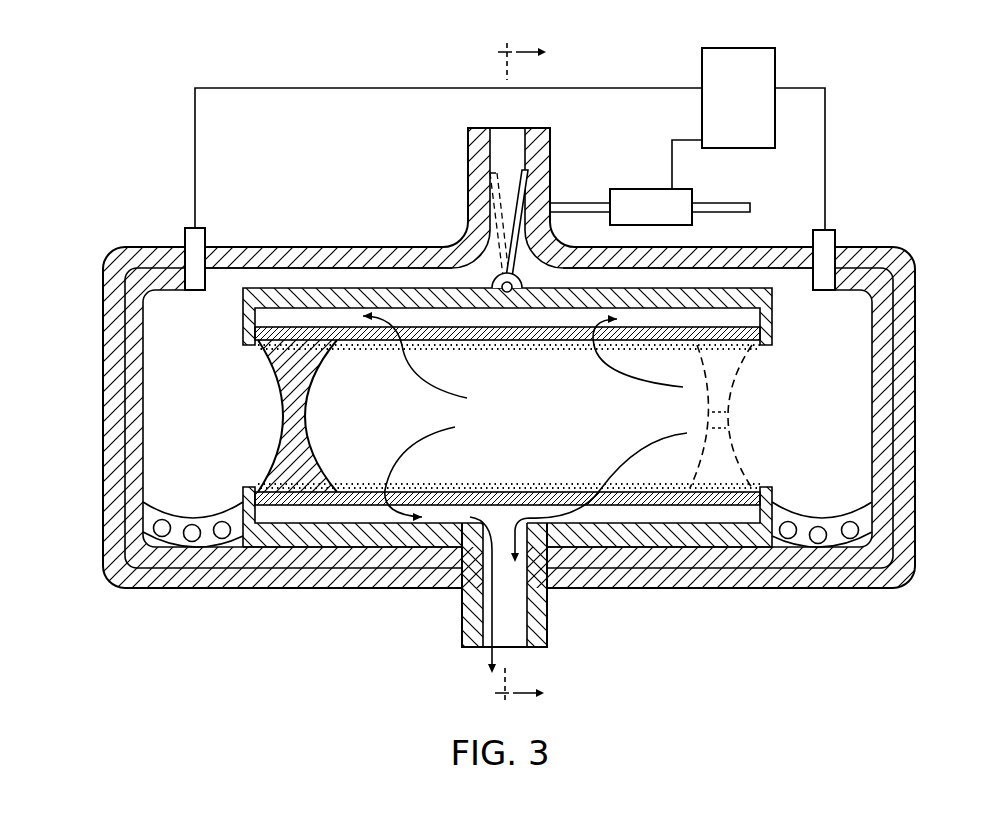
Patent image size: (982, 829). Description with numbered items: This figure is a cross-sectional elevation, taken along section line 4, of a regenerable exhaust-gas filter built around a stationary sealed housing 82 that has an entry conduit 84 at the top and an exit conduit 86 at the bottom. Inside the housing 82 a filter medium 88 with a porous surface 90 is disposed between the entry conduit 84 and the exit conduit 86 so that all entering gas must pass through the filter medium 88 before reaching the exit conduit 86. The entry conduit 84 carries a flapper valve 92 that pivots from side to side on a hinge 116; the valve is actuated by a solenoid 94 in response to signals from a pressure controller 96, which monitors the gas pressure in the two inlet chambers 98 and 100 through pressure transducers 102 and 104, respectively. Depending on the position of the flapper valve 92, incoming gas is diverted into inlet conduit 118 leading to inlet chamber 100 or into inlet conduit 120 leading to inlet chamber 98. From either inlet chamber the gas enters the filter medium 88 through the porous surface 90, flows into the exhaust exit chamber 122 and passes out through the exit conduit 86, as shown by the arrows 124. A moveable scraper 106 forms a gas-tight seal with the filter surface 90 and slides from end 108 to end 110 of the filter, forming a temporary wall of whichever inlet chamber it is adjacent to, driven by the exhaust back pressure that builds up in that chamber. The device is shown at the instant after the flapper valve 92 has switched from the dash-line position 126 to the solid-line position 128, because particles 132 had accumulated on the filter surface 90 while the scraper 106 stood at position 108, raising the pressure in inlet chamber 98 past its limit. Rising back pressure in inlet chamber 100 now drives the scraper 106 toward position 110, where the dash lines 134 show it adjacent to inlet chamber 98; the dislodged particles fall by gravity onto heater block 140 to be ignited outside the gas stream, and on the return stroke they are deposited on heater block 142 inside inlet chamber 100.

The section line 4- 4 is at (527, 372).
The sealed housing 82 is at (916, 308).
The entry conduit 84 is at (468, 147).
The exit conduit 86 is at (548, 632).
The filter medium 88 is at (432, 490).
The porous surface 90 is at (582, 490).
The flapper valve 92 is at (530, 183).
The solenoid 94 is at (694, 197).
The pressure controller 96 is at (776, 136).
The inlet chamber 98 is at (860, 403).
The inlet chamber 100 is at (162, 388).
The pressure transducer 102 is at (836, 243).
The pressure transducer 104 is at (206, 242).
The moveable scraper 106 is at (313, 370).
The end of filter 108 is at (313, 472).
The end of filter 110 is at (678, 487).
The hinge 116 is at (500, 283).
The inlet conduit 118 is at (343, 282).
The inlet conduit 120 is at (712, 280).
The exhaust exit chamber 122 is at (748, 324).
The arrows 124 is at (422, 386).
The flapper valve position 126 is at (480, 190).
The flapper valve position 128 is at (517, 170).
The particles 132 is at (540, 347).
The scraper dash-line position 134 is at (748, 368).
The heater block 140 is at (867, 512).
The heater block 142 is at (205, 515).